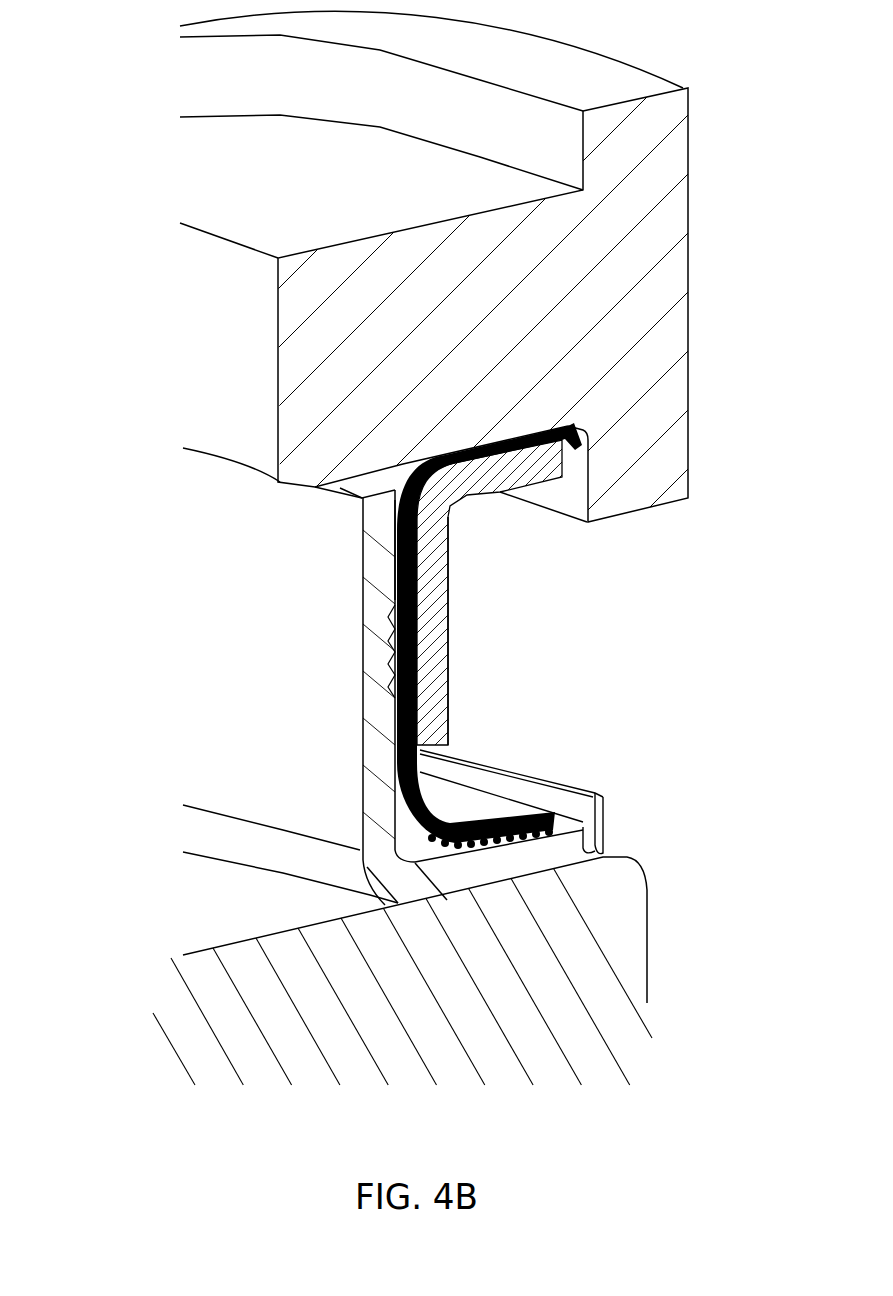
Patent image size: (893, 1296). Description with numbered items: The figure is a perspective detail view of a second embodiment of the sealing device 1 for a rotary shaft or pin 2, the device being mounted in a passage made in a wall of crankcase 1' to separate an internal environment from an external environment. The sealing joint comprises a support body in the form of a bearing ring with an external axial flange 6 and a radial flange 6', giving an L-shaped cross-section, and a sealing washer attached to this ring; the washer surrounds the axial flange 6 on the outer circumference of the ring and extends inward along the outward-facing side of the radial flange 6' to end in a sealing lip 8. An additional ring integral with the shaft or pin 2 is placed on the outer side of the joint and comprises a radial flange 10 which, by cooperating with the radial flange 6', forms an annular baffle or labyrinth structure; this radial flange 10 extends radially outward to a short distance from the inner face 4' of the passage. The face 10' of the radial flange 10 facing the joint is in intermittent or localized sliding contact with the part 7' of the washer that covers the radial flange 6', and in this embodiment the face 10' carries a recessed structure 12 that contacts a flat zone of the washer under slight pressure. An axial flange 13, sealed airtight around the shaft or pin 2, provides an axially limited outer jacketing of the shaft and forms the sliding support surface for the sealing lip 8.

The sealing device 1 is at (141, 552).
The wall of crankcase 1' is at (465, 270).
The rotary shaft or pin 2 is at (628, 947).
The inner face of the passage 4' is at (333, 559).
The external axial flange 6 is at (580, 592).
The radial flange 6' is at (533, 631).
The part of the sealing washer 7' is at (461, 595).
The sealing lip 8 is at (522, 818).
The radial flange 10 is at (247, 696).
The face of the radial flange 10' is at (233, 560).
The structure in relief and/or recessed 12 is at (397, 614).
The axial flange 13 is at (567, 850).